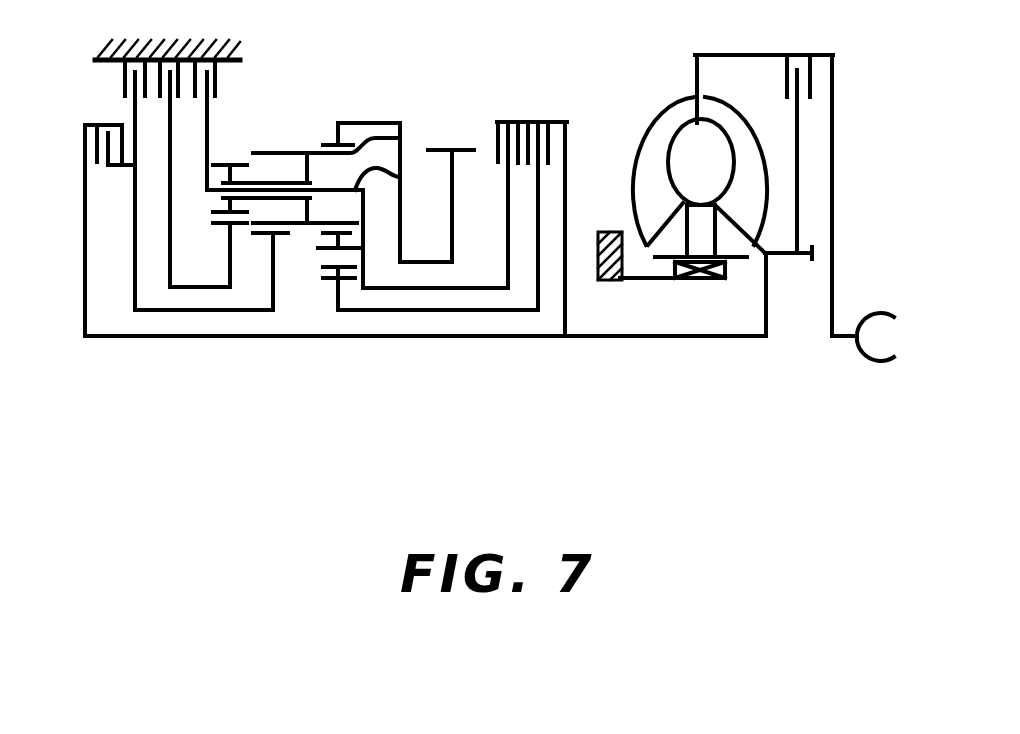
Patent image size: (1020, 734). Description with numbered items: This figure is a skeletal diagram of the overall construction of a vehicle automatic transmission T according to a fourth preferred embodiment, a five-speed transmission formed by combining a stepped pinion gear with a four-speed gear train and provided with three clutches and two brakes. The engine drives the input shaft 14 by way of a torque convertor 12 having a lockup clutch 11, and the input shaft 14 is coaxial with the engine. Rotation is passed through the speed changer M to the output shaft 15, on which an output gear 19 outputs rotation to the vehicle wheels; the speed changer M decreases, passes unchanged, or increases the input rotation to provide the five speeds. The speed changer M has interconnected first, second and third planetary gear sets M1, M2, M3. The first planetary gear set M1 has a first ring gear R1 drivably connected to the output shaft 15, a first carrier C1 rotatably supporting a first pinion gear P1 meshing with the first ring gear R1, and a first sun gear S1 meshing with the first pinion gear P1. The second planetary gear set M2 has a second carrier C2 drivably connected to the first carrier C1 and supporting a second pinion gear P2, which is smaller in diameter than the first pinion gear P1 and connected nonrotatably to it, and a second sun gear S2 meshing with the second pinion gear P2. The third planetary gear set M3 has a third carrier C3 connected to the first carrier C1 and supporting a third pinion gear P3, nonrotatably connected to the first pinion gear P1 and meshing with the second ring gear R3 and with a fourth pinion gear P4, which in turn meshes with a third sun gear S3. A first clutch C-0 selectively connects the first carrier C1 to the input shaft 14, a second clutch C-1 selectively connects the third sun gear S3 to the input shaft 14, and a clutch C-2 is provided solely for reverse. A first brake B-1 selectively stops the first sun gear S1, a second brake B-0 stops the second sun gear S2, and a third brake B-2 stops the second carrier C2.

The first brake B-1 is at (123, 72).
The second brake B-0 is at (160, 58).
The third brake B-2 is at (225, 70).
The clutch C-2 is at (74, 130).
The first pinion gear P1 is at (272, 150).
The second pinion gear P2 is at (228, 163).
The third pinion gear P3 is at (398, 132).
The fourth pinion gear P4 is at (360, 249).
The first ring gear R1 is at (326, 142).
The second ring gear R3 is at (361, 134).
The first sun gear S1 is at (264, 236).
The second sun gear S2 is at (228, 232).
The third sun gear S3 is at (335, 281).
The first carrier C1 is at (398, 177).
The second carrier C2 is at (208, 195).
The third carrier C3 is at (322, 236).
The first clutch C-0 is at (494, 133).
The second clutch C-1 is at (577, 95).
The automatic transmission T is at (568, 76).
The lockup clutch 11 is at (787, 62).
The torque convertor 12 is at (693, 70).
The input shaft 14 is at (575, 338).
The output shaft 15 is at (417, 258).
The output gear 19 is at (461, 148).
The first planetary gear set M1 is at (275, 339).
The second planetary gear set M2 is at (233, 340).
The third planetary gear set M3 is at (341, 339).
The speed changer M is at (370, 412).